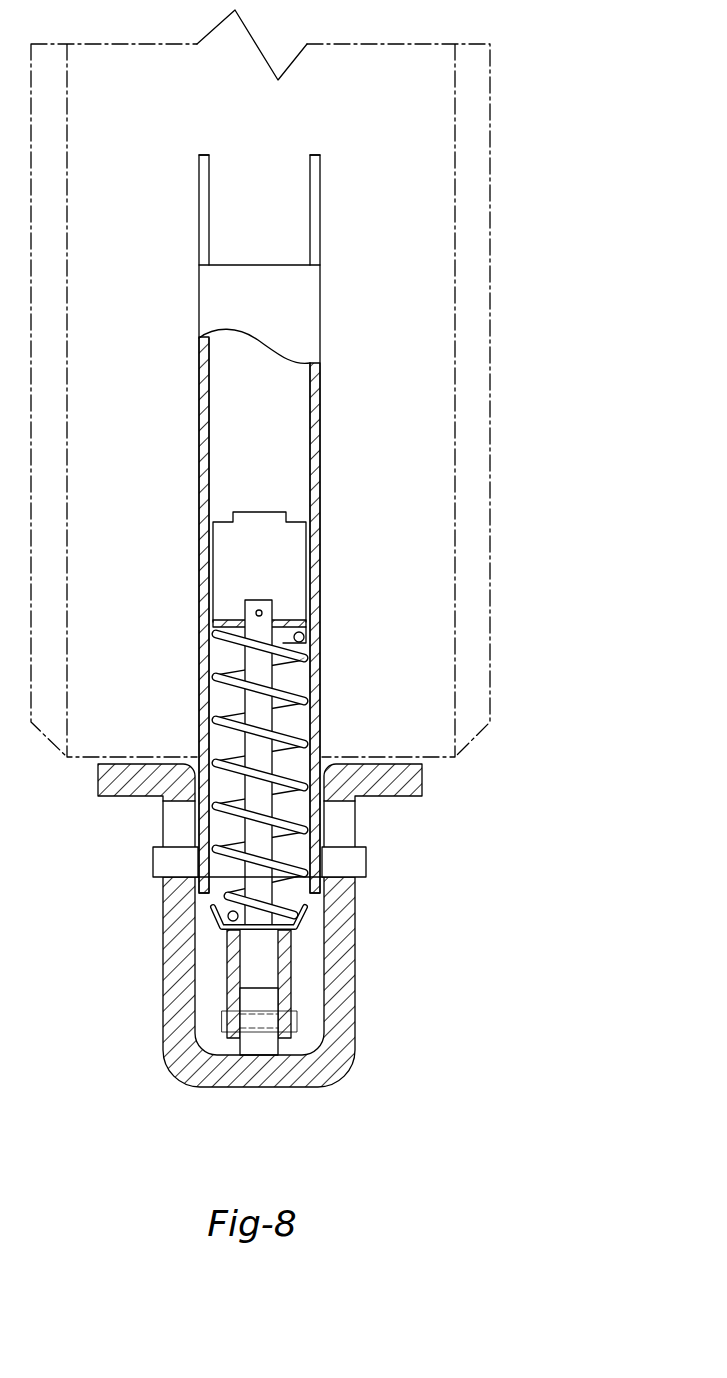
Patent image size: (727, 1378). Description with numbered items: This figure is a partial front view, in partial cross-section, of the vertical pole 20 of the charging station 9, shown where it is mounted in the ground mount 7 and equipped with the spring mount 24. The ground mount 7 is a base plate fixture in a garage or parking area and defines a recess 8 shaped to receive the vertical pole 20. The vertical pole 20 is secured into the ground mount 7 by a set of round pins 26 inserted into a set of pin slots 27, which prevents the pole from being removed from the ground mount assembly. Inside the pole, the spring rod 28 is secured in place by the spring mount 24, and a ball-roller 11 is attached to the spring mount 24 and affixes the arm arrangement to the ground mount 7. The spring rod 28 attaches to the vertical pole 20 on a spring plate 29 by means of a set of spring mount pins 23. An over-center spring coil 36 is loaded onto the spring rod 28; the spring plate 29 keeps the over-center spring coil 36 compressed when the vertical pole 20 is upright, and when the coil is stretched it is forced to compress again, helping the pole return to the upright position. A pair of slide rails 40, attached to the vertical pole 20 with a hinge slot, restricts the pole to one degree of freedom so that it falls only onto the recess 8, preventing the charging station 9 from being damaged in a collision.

The ground mount 7 is at (125, 763).
The recess 8 is at (310, 952).
The charging station 9 is at (364, 329).
The ball-roller 11 is at (257, 1040).
The vertical pole 20 is at (319, 466).
The spring mount pins 23 is at (258, 610).
The spring mount 24 is at (220, 929).
The round pins 26 is at (160, 862).
The pin slots 27 is at (170, 826).
The spring rod 28 is at (291, 745).
The spring plate 29 is at (296, 617).
The over-center spring coil 36 is at (297, 657).
The slide rails 40 is at (328, 797).